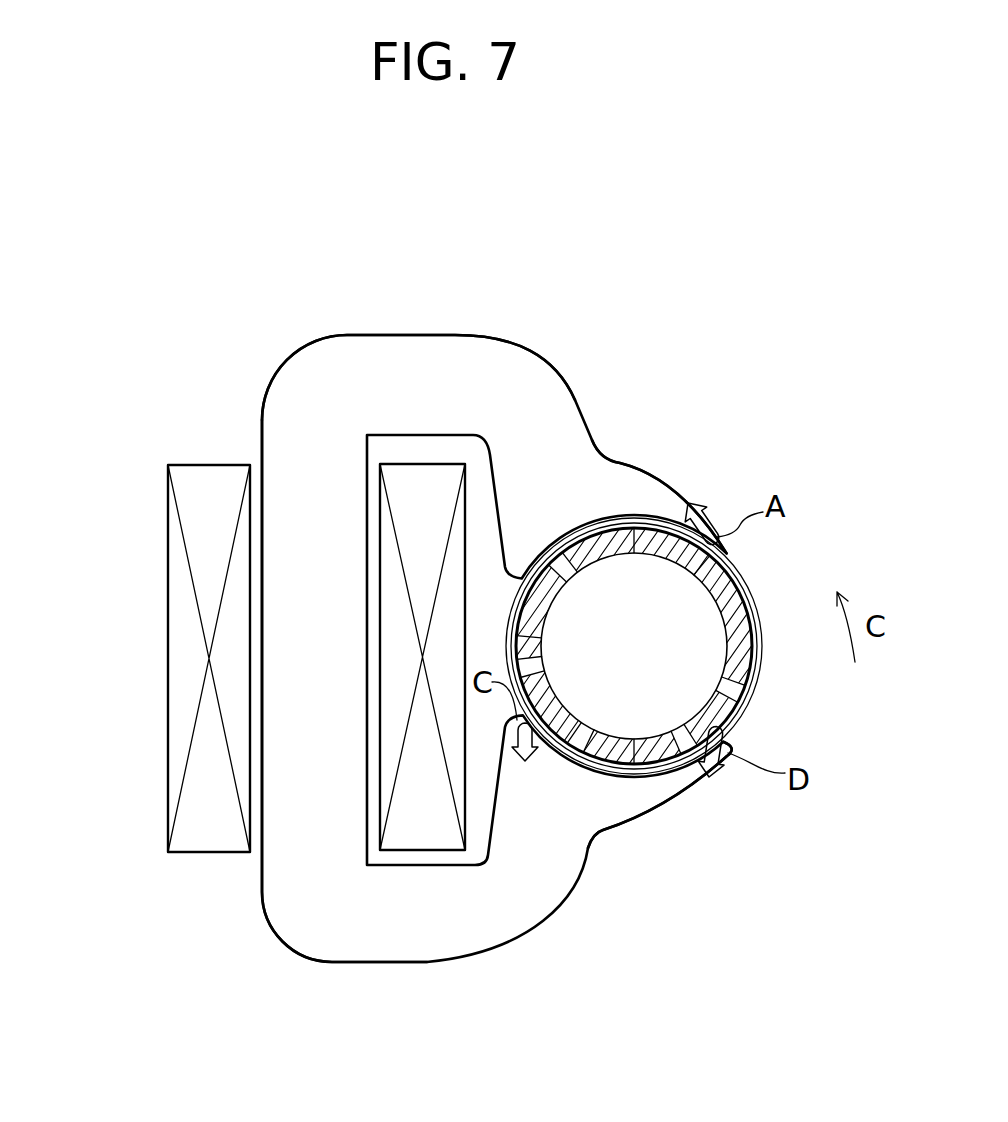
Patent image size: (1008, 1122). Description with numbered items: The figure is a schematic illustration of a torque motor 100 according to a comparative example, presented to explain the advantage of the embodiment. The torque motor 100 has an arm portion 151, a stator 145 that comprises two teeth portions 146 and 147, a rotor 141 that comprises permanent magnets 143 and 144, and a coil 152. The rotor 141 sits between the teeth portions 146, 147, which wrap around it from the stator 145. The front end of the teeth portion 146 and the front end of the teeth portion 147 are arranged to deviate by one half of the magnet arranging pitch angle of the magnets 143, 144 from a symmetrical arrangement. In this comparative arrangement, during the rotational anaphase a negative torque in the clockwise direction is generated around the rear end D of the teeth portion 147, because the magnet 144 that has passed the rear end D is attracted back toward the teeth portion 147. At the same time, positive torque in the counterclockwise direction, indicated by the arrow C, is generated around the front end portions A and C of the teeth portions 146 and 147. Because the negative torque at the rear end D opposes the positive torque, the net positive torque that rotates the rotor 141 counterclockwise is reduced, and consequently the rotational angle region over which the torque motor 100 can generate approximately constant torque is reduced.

The torque motor 100 is at (578, 276).
The rotor 141 is at (776, 690).
The permanent magnet 143 is at (753, 580).
The permanent magnet 144 is at (672, 752).
The stator 145 is at (363, 314).
The teeth portion 146 is at (647, 500).
The teeth portion 147 is at (648, 800).
The arm portion 151 is at (303, 815).
The coil 152 is at (185, 642).